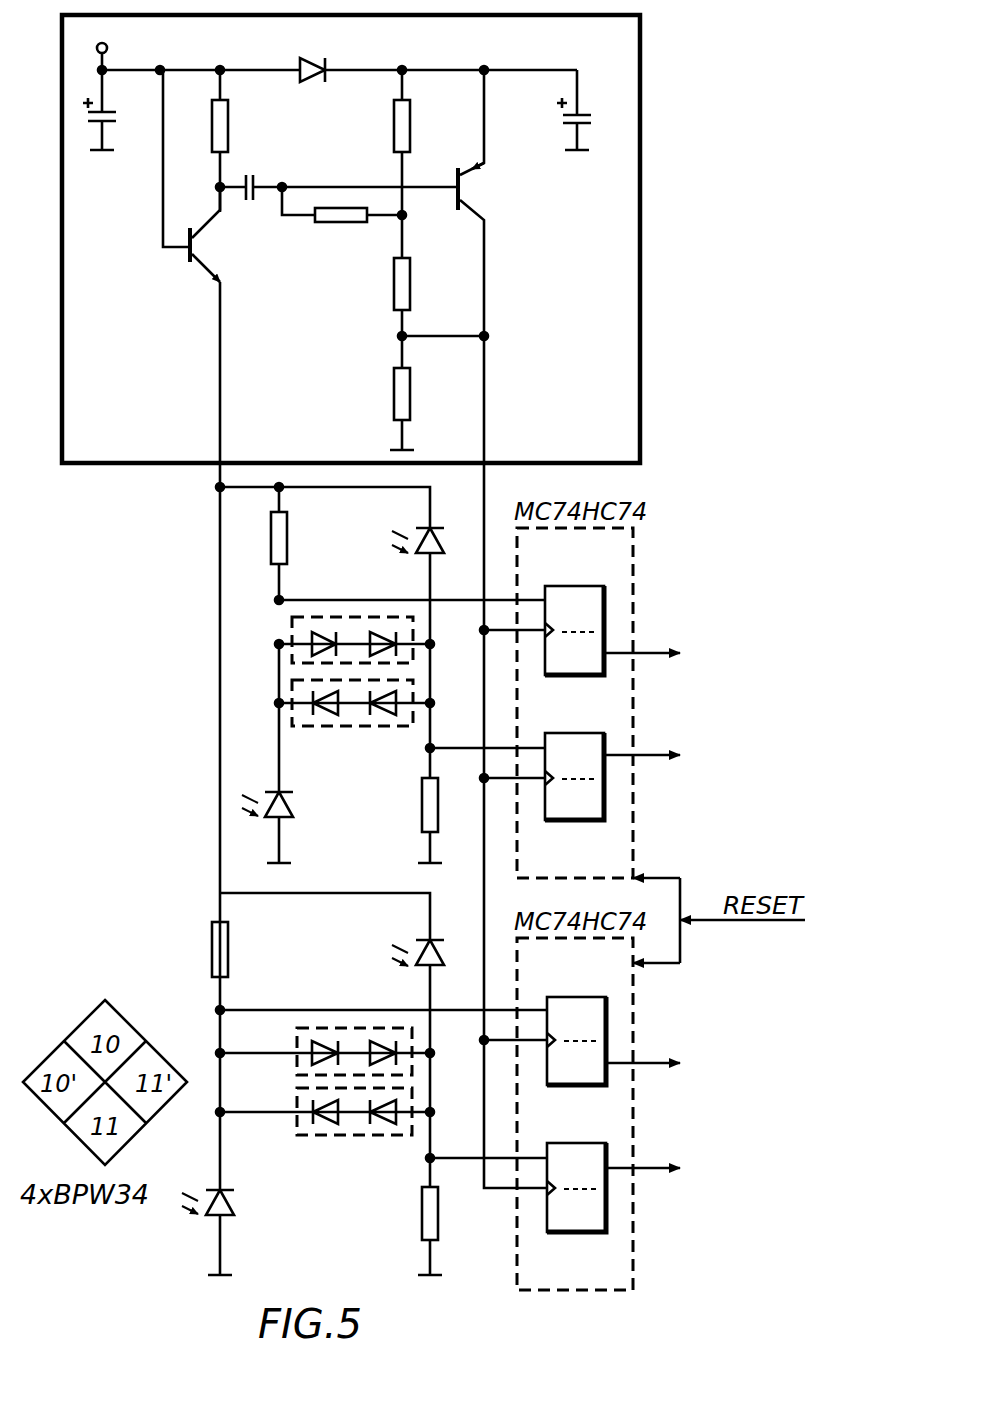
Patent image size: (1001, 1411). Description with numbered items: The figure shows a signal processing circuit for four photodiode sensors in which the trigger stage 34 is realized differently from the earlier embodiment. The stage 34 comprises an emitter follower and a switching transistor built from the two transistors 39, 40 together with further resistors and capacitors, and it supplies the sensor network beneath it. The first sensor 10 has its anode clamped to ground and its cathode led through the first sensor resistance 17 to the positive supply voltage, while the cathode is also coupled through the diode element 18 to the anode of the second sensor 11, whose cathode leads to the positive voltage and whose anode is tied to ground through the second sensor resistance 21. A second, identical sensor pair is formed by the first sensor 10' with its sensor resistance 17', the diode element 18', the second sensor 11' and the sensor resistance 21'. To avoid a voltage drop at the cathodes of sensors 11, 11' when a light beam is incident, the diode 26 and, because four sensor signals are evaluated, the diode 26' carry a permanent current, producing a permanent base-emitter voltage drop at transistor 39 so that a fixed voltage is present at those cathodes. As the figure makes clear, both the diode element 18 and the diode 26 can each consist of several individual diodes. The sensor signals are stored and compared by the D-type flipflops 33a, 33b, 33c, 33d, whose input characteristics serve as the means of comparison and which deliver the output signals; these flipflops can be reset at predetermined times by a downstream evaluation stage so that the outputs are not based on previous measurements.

The trigger stage 34 is at (645, 295).
The transistor 39 is at (188, 258).
The transistor 40 is at (462, 210).
The first sensor resistance 17 is at (311, 543).
The second sensor 11 is at (444, 558).
The diode 26 is at (330, 625).
The diode element 18 is at (330, 711).
The first sensor 10 is at (297, 828).
The second sensor resistance 21 is at (407, 817).
The D-type flipflop 33a is at (607, 607).
The D-type flipflop 33b is at (607, 800).
The D-type flipflop 33c is at (608, 1012).
The D-type flipflop 33d is at (608, 1213).
The first sensor resistance 17' is at (188, 941).
The second sensor 11' is at (388, 977).
The diode 26' is at (325, 1016).
The diode element 18' is at (325, 1124).
The first sensor 10' is at (195, 1232).
The second sensor resistance 21' is at (397, 1228).